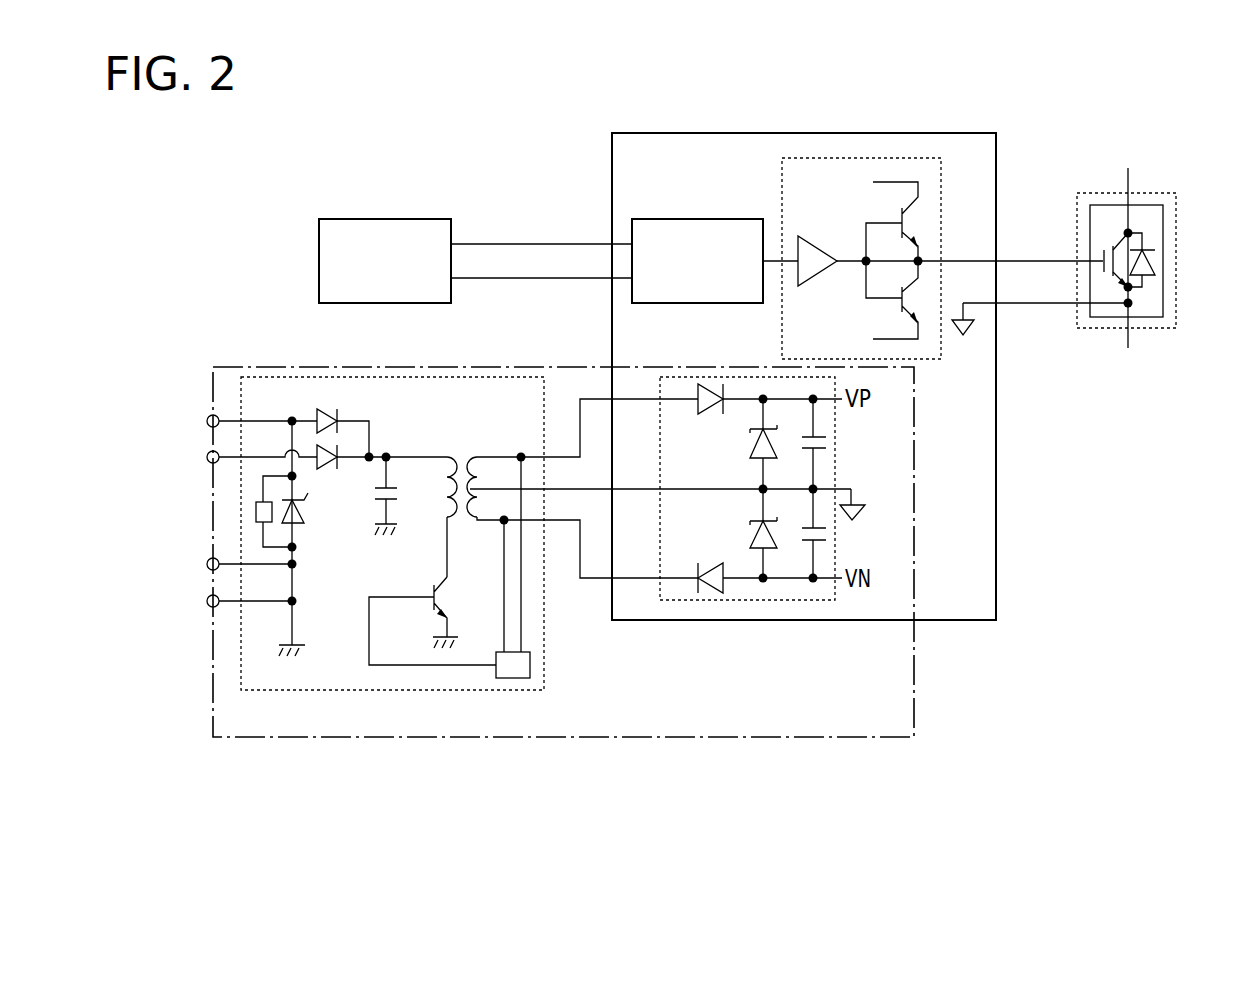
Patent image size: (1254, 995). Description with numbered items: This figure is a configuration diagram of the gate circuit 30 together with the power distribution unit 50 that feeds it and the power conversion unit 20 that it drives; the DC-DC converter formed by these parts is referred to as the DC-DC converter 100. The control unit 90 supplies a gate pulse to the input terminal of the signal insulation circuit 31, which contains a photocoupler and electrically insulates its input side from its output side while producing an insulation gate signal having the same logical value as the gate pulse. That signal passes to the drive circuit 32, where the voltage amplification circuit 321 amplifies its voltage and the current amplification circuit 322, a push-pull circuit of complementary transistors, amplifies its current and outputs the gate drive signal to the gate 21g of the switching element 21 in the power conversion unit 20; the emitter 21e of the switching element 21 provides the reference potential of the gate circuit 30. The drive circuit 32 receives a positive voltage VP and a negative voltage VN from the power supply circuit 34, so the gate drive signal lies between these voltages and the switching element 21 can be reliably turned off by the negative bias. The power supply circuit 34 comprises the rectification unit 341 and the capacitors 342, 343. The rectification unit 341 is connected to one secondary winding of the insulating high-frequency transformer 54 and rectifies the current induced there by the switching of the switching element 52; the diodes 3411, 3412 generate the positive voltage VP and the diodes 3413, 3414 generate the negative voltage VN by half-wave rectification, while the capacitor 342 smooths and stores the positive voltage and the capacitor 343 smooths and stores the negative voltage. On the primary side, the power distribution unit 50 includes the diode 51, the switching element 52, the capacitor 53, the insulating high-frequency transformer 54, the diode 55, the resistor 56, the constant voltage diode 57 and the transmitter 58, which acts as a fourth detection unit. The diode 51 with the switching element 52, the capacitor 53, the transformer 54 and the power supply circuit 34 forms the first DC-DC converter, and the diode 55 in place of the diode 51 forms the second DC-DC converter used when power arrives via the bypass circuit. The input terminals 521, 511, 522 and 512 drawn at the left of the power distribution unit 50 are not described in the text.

The DC-DC converter 100 is at (914, 670).
The control unit 90 is at (392, 219).
The gate circuit 30 is at (923, 133).
The signal insulation circuit 31 is at (703, 219).
The drive circuit 32 is at (941, 350).
The voltage amplification circuit 321 is at (822, 244).
The current amplification circuit 322 is at (930, 229).
The power supply circuit 34 is at (677, 600).
The rectification unit 341 is at (722, 503).
The diode 3411 is at (706, 382).
The diode 3412 is at (749, 442).
The diode 3413 is at (712, 550).
The diode 3414 is at (749, 535).
The capacitor 342 is at (826, 447).
The capacitor 343 is at (826, 540).
The power conversion unit 20 is at (1176, 278).
The switching element 21 is at (1130, 263).
The gate 21g is at (1102, 258).
The emitter 21e is at (1128, 233).
The power distribution unit 50 is at (544, 662).
The diode 51 is at (322, 470).
The switching element 52 is at (434, 590).
The capacitor 53 is at (397, 487).
The insulating high-frequency transformer 54 is at (460, 453).
The diode 55 is at (322, 410).
The resistor 56 is at (256, 511).
The constant voltage diode 57 is at (304, 515).
The transmitter 58 is at (510, 678).
The input terminal 521 is at (207, 422).
The input terminal 511 is at (207, 458).
The input terminal 522 is at (207, 565).
The input terminal 512 is at (207, 602).